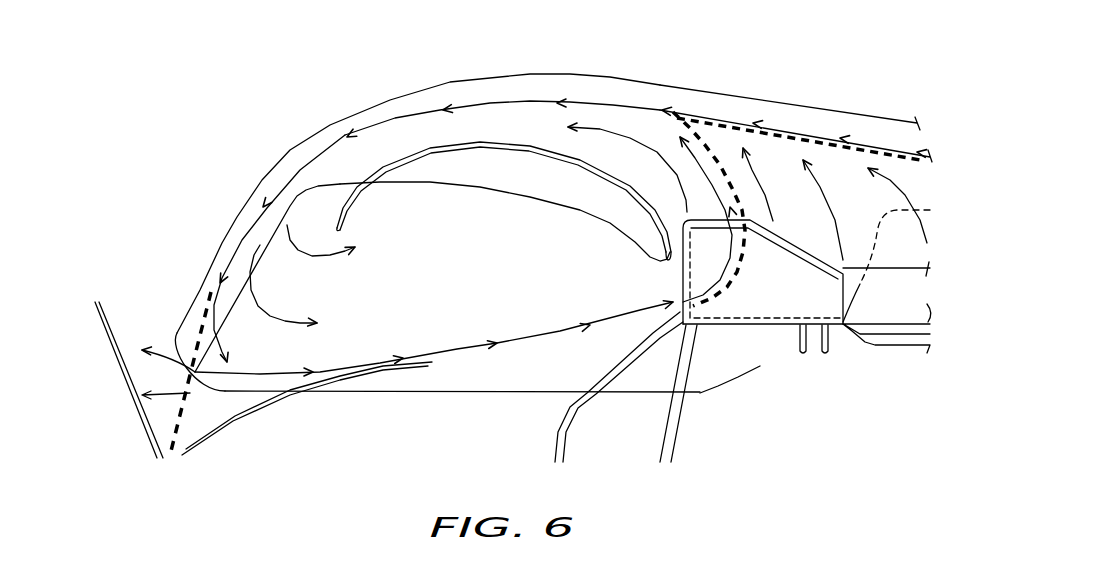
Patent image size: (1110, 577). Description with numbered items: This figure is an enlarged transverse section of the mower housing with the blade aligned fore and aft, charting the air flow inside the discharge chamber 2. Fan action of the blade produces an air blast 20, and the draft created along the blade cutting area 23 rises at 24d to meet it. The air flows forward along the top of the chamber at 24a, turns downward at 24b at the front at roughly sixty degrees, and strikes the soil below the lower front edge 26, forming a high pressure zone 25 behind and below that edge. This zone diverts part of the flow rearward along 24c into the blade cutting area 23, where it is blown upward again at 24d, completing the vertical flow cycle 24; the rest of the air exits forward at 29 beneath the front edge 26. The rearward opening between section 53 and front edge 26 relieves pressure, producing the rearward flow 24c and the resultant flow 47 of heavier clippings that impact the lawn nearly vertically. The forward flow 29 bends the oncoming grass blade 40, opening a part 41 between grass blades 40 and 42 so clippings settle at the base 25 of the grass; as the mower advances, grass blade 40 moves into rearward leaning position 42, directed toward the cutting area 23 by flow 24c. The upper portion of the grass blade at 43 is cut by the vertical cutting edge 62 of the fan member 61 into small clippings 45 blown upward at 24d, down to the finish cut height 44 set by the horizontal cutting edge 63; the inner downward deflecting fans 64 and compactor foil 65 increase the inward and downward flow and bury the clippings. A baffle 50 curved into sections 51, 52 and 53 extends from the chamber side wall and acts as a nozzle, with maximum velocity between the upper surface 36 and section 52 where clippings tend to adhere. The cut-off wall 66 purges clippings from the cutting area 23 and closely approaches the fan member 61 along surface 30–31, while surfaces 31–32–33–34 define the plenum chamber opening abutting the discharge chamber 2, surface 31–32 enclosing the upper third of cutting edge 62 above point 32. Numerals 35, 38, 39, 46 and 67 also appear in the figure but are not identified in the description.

The discharge chamber 2 is at (467, 264).
The air blast 20 is at (822, 135).
The blade cutting area 23 is at (683, 333).
The vertical flow cycle 24 is at (453, 207).
The forward flow along the top of the discharge chamber 24a is at (477, 103).
The downward flow at the front of the discharge chamber 24b is at (233, 218).
The rearward air flow 24c is at (457, 350).
The upward flow from the blade cutting area 24d is at (730, 197).
The high pressure zone 25 is at (178, 456).
The front edge of the discharge chamber 26 is at (168, 334).
The forward air flow 29 is at (168, 346).
The surface point of the cut-off wall 30 is at (838, 258).
The surface point 31 is at (645, 167).
The surface point 32 is at (670, 262).
The surface point 33 is at (317, 192).
The surface point 34 is at (195, 372).
The fender upper surface 35 is at (785, 103).
The upper surface of the discharge chamber 36 is at (407, 95).
The hood lower edge 38 is at (262, 388).
The underbody panel 39 is at (702, 400).
The grass blade 40 is at (95, 303).
The part between grass blades 41 is at (228, 409).
The rearward leaning grass blade position 42 is at (307, 408).
The upper portion of the grass blade 43 is at (600, 378).
The finish cut height 44 is at (692, 393).
The small clippings 45 is at (721, 298).
The fender seal 46 is at (820, 143).
The flow of heavier clippings 47 is at (194, 378).
The baffle 50 is at (467, 145).
The baffle section 51 is at (643, 250).
The baffle section 52 is at (413, 153).
The baffle section 53 is at (343, 230).
The fan member 61 is at (785, 252).
The front cutting edge 62 is at (693, 257).
The horizontal cutting edge 63 is at (718, 327).
The inner downward deflecting fans 64 is at (865, 297).
The compactor foil 65 is at (863, 346).
The discharge chamber cut-off wall 66 is at (781, 197).
The mounting legs 67 is at (823, 356).